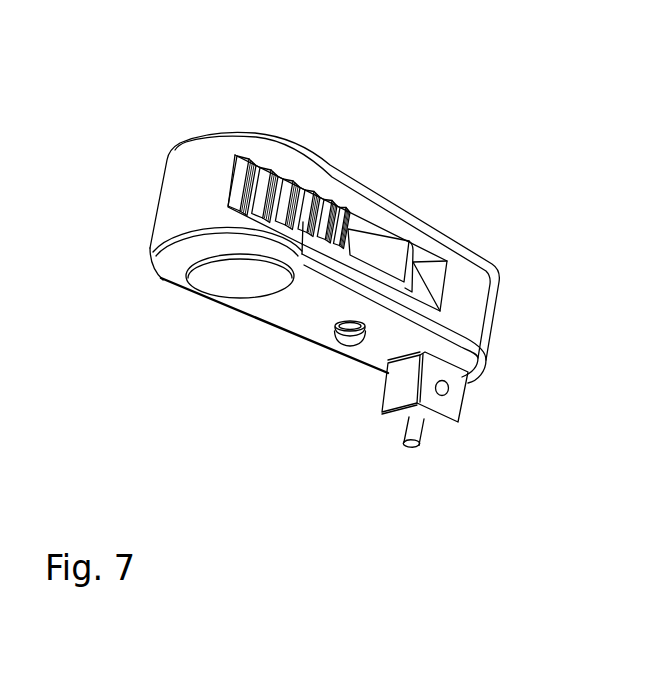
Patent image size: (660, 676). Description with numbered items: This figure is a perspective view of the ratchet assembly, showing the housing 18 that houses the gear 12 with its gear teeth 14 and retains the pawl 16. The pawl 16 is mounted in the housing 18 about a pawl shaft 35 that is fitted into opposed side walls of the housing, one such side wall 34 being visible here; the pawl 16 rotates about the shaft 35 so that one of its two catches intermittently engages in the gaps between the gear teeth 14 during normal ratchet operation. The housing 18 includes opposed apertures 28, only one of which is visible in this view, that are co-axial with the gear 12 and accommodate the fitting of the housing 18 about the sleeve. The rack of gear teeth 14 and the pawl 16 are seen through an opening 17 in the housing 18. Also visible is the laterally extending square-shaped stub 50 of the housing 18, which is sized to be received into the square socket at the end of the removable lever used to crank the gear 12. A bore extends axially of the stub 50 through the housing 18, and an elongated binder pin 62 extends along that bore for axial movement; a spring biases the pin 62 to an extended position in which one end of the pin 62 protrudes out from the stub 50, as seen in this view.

The gear 12 is at (285, 180).
The gear teeth 14 is at (254, 162).
The pawl 16 is at (390, 257).
The slot window 17 is at (363, 203).
The housing 18 is at (478, 277).
The apertures 28 is at (190, 274).
The side wall 34 is at (294, 306).
The pawl shaft 35 is at (341, 345).
The stub 50 is at (465, 397).
The binder pin 62 is at (413, 447).